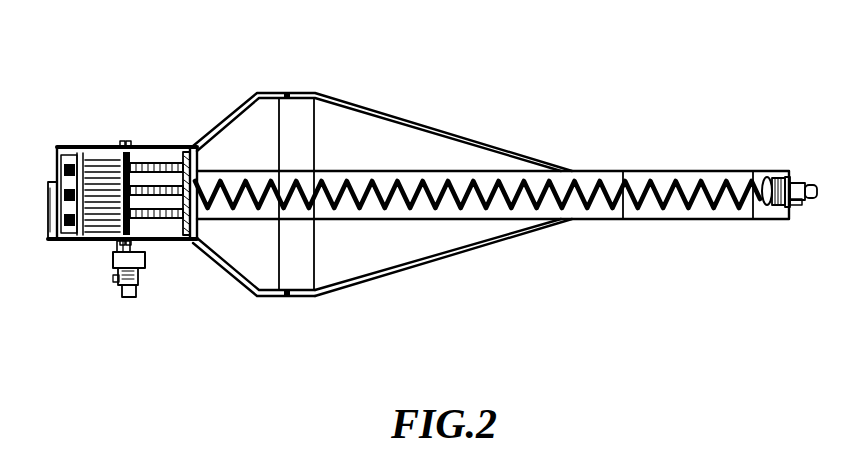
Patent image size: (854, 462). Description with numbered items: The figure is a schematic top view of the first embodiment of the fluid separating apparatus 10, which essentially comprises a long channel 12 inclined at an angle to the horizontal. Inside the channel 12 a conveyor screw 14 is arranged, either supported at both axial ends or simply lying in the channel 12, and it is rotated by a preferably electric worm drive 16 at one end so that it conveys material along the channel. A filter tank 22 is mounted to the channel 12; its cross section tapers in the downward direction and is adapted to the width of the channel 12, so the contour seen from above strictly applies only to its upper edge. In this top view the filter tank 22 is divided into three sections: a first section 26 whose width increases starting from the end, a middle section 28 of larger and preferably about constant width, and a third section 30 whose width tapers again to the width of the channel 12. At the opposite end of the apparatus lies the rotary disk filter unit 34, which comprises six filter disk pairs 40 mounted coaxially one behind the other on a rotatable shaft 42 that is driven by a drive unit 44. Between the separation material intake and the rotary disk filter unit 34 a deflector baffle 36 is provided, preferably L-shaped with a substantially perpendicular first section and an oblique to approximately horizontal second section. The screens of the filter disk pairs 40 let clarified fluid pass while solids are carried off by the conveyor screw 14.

The fluid separating apparatus 10 is at (550, 141).
The channel 12 is at (697, 221).
The conveyor screw 14 is at (598, 200).
The worm drive 16 is at (801, 181).
The filter tank 22 is at (420, 158).
The first section 26 is at (253, 252).
The middle section 28 is at (300, 267).
The third section 30 is at (423, 233).
The rotary disk filter unit 34 is at (105, 140).
The deflector baffle 36 is at (278, 148).
The filter disk pairs 40 is at (142, 160).
The rotatable shaft 42 is at (127, 153).
The drive unit 44 is at (112, 262).